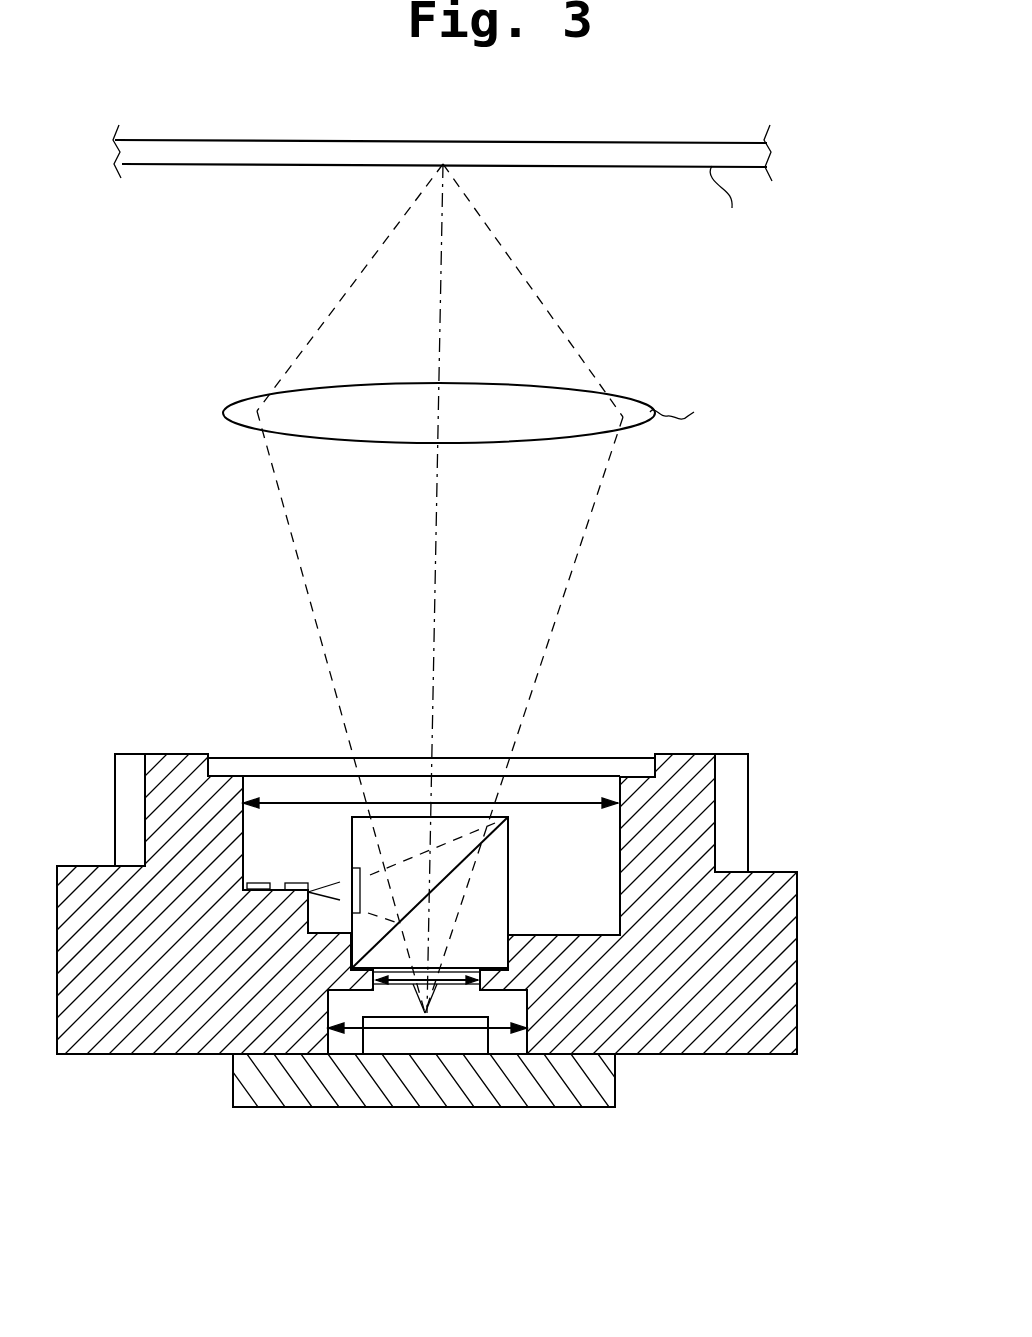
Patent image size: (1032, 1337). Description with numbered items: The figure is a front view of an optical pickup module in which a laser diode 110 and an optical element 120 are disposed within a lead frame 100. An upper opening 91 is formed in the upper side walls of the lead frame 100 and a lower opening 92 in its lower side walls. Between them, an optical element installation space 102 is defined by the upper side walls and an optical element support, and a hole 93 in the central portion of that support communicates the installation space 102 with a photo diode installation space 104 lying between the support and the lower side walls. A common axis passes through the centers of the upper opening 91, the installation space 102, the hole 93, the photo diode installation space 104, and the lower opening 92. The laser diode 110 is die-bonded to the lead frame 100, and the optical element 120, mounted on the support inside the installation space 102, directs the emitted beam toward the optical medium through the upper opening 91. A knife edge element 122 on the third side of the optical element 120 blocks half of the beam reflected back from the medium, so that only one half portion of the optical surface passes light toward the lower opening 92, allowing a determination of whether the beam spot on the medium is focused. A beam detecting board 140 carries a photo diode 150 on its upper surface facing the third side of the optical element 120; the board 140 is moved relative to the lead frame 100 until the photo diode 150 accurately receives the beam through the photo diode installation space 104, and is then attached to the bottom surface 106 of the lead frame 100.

The upper opening 91 is at (448, 803).
The lower opening 92 is at (452, 1013).
The hole 93 is at (477, 952).
The lead frame 100 is at (783, 1008).
The optical element installation space 102 is at (590, 837).
The photo diode installation space 104 is at (505, 1047).
The bottom surface 106 is at (622, 778).
The laser diode 110 is at (290, 888).
The optical element 120 is at (497, 896).
The knife edge element 122 is at (477, 952).
The beam detecting board 140 is at (577, 1093).
The photo diode 150 is at (403, 1040).